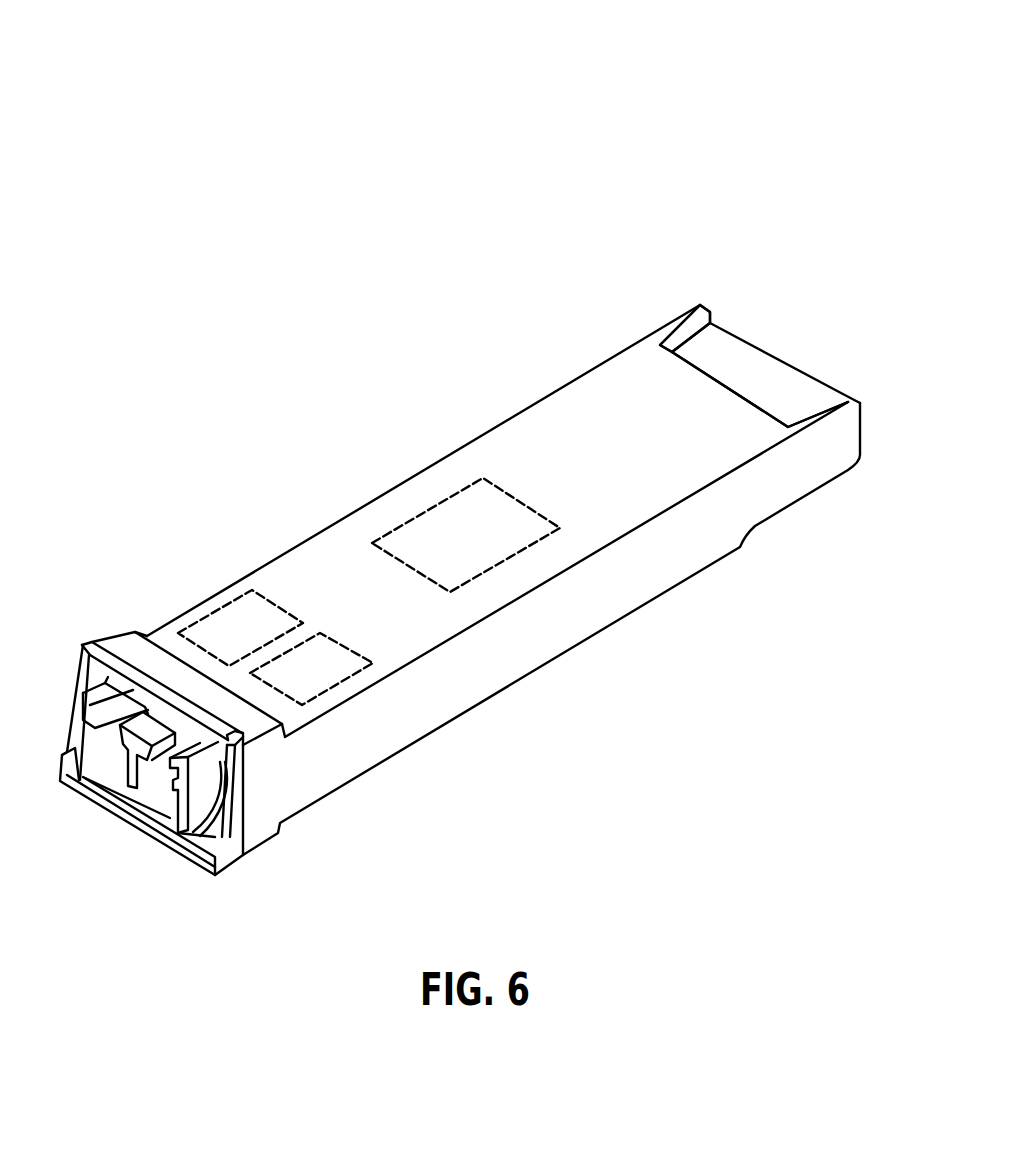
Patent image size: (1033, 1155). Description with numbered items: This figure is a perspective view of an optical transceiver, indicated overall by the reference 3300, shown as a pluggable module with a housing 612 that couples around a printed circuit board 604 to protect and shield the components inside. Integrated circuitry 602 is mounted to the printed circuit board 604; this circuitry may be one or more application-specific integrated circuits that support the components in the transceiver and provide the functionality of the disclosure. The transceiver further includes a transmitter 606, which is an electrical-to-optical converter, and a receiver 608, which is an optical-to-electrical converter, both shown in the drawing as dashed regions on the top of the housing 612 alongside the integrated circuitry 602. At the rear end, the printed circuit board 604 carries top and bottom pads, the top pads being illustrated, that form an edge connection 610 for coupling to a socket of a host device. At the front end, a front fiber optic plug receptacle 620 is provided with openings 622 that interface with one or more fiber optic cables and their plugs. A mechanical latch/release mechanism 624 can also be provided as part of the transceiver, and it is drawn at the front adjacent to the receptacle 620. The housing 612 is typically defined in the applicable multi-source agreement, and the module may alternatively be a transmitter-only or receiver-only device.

The optical transceiver module 3300 is at (542, 92).
The housing 612 is at (608, 400).
The edge connection 610 is at (735, 353).
The printed circuit board 604 is at (747, 390).
The integrated circuitry 602 is at (460, 537).
The transmitter 606 is at (323, 663).
The receiver 608 is at (223, 630).
The mechanical latch/release mechanism 624 is at (232, 845).
The openings 622 is at (170, 815).
The front fiber optic plug receptacle 620 is at (202, 855).